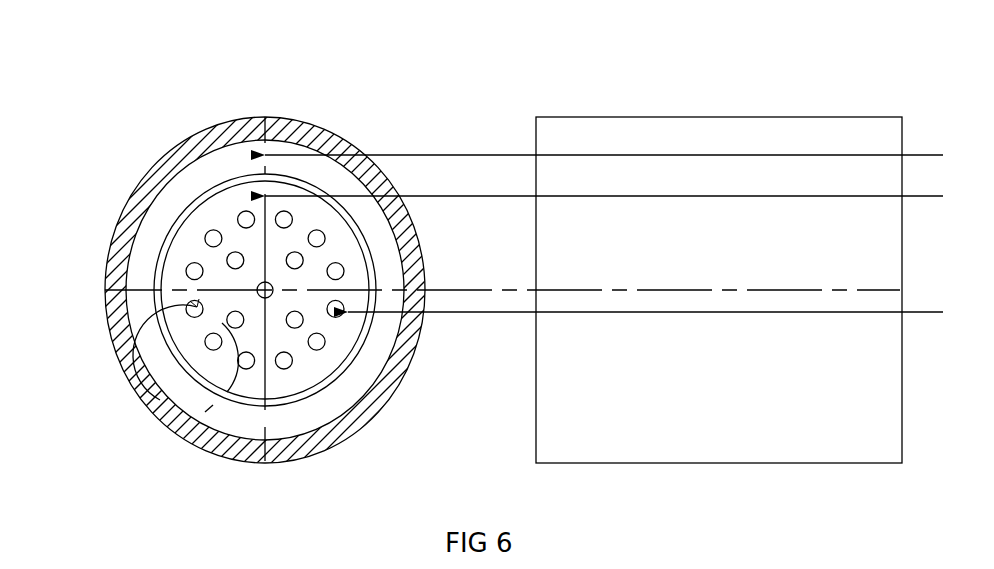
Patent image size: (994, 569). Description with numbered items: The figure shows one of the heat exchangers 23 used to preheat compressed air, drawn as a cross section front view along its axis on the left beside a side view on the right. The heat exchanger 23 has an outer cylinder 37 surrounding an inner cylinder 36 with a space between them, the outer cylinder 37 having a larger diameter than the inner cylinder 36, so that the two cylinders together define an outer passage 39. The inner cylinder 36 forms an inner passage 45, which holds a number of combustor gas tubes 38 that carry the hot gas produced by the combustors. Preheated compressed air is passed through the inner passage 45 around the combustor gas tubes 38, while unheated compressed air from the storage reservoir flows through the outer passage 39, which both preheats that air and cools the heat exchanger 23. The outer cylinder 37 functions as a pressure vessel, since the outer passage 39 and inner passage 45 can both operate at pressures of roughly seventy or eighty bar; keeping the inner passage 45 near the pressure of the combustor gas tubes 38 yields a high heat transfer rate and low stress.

The first heat exchanger 23 is at (200, 107).
The inner cylinder 36 is at (172, 243).
The outer cylinder 37 is at (153, 183).
The combustor gas tubes 38 is at (284, 362).
The outer passage 39 is at (140, 313).
The inner passage 45 is at (312, 365).